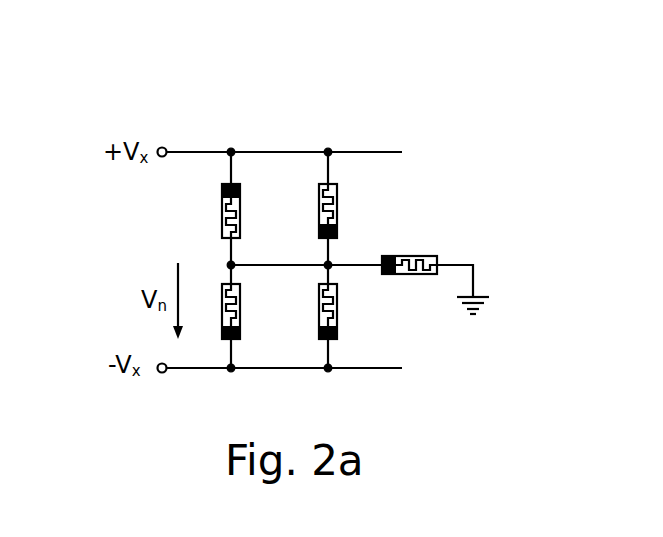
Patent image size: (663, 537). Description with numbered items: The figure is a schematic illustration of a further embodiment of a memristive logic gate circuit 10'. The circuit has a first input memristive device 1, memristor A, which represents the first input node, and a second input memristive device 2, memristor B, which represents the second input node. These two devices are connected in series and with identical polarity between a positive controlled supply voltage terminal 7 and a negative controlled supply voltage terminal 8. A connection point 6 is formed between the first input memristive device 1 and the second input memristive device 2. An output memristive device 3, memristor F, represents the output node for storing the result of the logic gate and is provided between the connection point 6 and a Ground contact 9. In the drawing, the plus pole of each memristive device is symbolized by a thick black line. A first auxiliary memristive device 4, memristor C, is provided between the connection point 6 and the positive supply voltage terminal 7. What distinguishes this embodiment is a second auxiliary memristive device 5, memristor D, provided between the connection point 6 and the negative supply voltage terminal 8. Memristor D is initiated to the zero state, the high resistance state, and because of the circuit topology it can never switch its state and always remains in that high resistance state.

The memristive logic gate circuit 10' is at (187, 192).
The first input memristive device 1 is at (338, 196).
The second input memristive device 2 is at (340, 329).
The output memristive device 3 is at (437, 257).
The first auxiliary memristive device 4 is at (240, 197).
The second auxiliary memristive device 5 is at (240, 337).
The connection point 6 is at (327, 267).
The positive controlled supply voltage terminal 7 is at (295, 152).
The negative controlled supply voltage terminal 8 is at (342, 370).
The Ground contact 9 is at (483, 297).